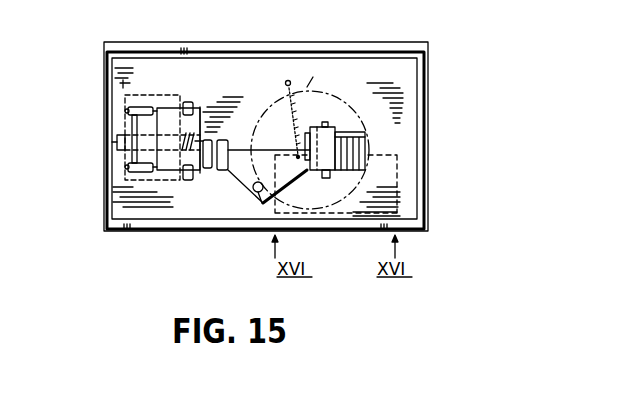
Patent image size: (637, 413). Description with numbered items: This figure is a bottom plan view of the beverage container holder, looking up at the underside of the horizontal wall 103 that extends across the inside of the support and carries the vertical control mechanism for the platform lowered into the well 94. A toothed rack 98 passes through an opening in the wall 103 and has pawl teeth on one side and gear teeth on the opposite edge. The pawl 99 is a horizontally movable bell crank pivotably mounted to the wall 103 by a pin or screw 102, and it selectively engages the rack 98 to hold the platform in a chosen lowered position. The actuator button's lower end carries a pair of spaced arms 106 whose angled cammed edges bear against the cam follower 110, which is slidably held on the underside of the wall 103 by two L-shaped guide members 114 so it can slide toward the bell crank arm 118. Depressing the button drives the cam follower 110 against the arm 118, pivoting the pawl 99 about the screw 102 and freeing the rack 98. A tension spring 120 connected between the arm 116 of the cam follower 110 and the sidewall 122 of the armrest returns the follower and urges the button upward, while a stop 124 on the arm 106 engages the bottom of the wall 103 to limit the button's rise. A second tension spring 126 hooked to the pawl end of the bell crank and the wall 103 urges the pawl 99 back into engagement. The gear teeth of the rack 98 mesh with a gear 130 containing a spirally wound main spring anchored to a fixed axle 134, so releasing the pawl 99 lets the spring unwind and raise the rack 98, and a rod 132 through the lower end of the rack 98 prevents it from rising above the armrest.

The well 94 is at (335, 54).
The toothed rack 98 is at (336, 131).
The pawl 99 is at (254, 152).
The pin or screw 102 is at (261, 200).
The horizontal wall 103 is at (267, 89).
The spaced arms 106 is at (153, 108).
The cam follower 110 is at (200, 110).
The L-shaped guide members 114 is at (190, 102).
The arm of cam follower 116 is at (204, 170).
The bell crank arm 118 is at (223, 140).
The tension spring 120 is at (182, 133).
The sidewall 122 is at (103, 119).
The stop 124 is at (127, 111).
The tension spring 126 is at (296, 97).
The gear 130 is at (366, 168).
The rod 132 is at (326, 180).
The fixed axle 134 is at (305, 174).